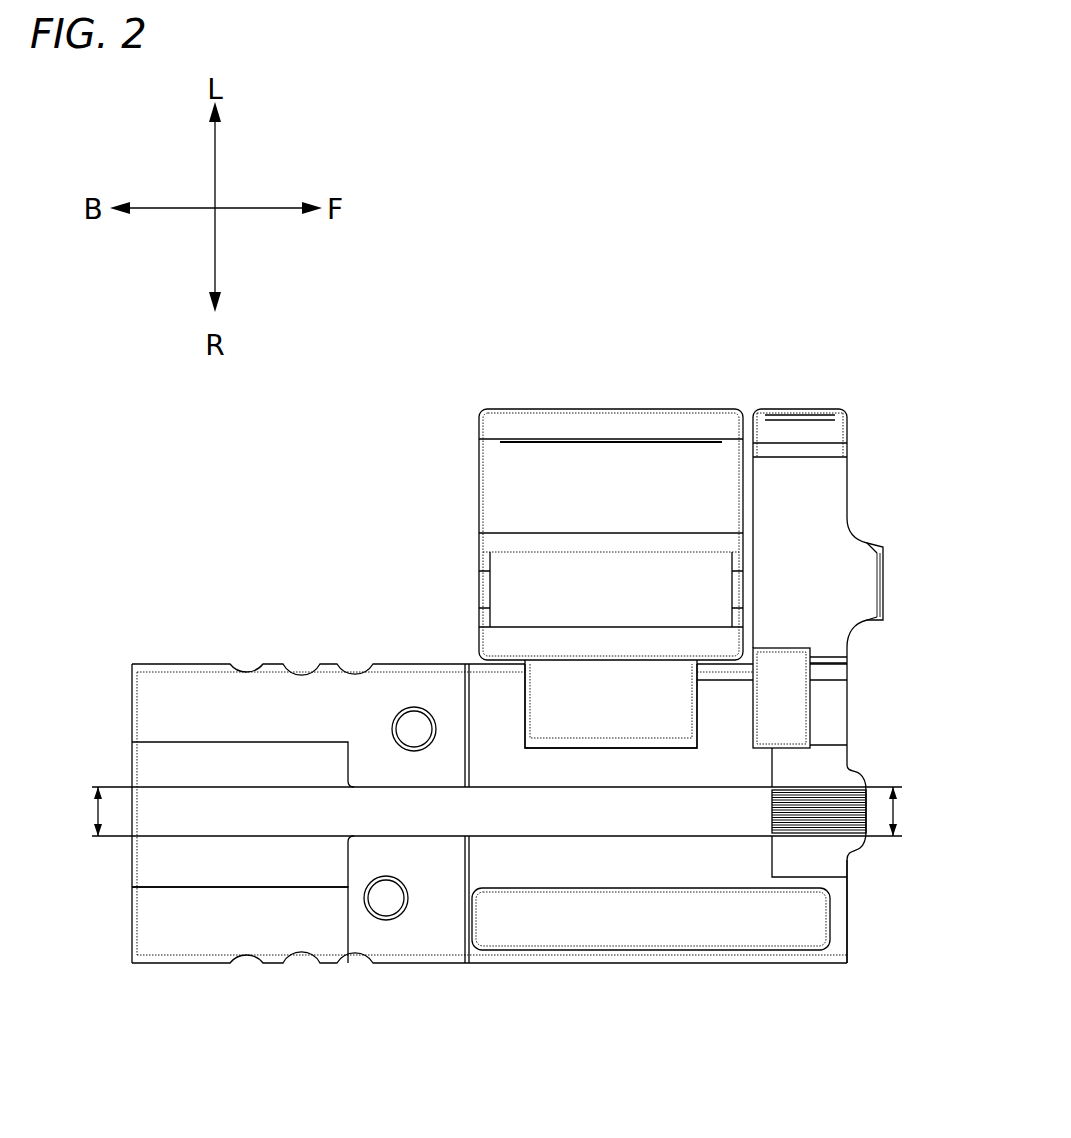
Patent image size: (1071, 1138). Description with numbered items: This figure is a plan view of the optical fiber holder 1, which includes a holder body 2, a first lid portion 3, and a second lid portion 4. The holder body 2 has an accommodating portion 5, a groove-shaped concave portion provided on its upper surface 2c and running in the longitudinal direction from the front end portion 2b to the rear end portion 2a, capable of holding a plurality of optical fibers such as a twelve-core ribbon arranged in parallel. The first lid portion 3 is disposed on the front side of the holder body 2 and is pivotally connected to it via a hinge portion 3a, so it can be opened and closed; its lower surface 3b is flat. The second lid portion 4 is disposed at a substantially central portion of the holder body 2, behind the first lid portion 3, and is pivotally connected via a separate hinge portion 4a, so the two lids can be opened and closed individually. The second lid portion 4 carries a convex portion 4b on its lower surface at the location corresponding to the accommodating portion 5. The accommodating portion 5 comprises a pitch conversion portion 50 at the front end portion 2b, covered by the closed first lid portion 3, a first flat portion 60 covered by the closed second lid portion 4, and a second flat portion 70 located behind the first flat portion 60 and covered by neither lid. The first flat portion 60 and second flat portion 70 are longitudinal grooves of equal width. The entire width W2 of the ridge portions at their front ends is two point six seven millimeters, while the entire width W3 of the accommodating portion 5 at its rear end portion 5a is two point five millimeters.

The optical fiber holder 1 is at (750, 315).
The holder body 2 is at (730, 965).
The rear end portion 2a is at (130, 867).
The front end portion 2b is at (847, 908).
The upper surface 2c is at (323, 927).
The first lid portion 3 is at (802, 410).
The hinge portion 3a is at (787, 707).
The lower surface 3b is at (850, 583).
The second lid portion 4 is at (560, 410).
The hinge portion 4a is at (578, 686).
The convex portion 4b is at (530, 582).
The accommodating portion 5 is at (490, 792).
The rear end portion 5a is at (130, 812).
The pitch conversion portion 50 is at (756, 814).
The first flat portion 60 is at (565, 818).
The second flat portion 70 is at (213, 803).
The entire width W2 is at (898, 811).
The entire width W3 is at (81, 811).